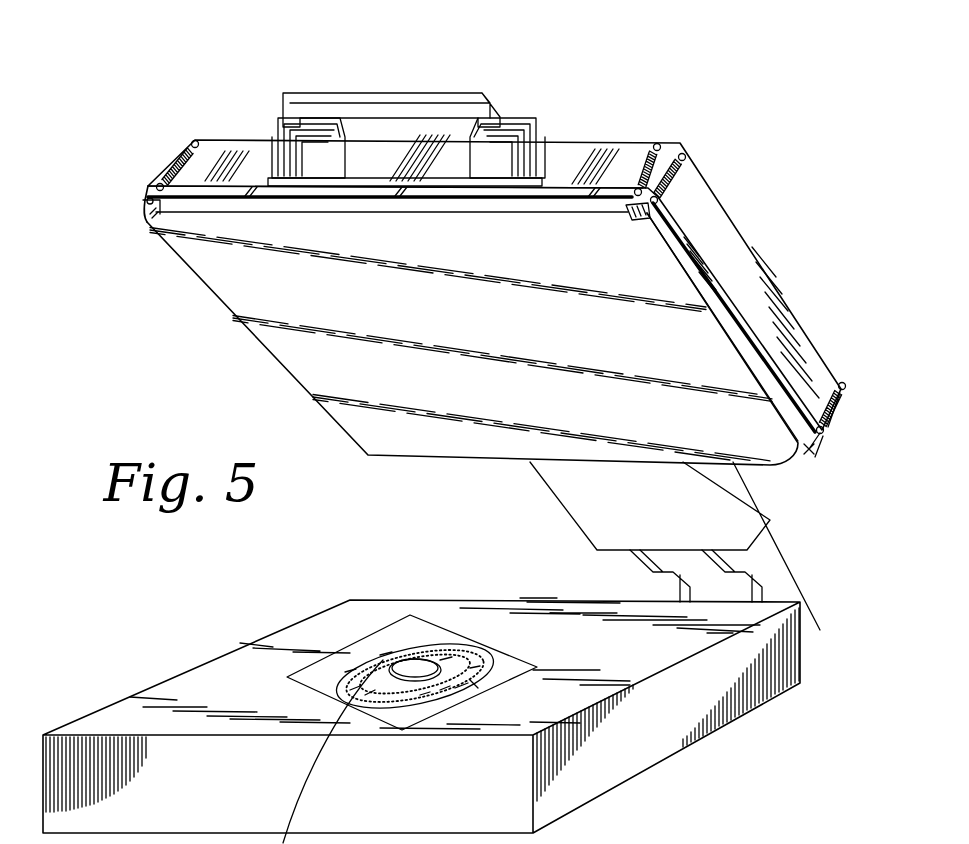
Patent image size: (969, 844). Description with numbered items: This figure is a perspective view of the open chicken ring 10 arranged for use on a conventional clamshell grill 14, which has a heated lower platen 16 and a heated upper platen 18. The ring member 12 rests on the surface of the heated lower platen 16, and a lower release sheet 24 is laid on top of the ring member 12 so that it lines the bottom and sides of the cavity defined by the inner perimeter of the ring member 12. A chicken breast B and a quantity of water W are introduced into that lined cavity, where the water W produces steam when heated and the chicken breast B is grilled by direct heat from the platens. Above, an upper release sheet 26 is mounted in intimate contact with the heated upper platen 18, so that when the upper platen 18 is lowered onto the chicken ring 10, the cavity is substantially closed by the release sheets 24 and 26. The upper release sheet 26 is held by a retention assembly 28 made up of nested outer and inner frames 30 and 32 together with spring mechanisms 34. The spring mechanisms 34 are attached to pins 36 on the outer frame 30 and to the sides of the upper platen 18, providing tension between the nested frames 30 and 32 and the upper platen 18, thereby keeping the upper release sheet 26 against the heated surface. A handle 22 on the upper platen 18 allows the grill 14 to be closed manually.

The open chicken ring 10 is at (484, 630).
The ring member 12 is at (382, 657).
The clamshell grill 14 is at (535, 85).
The heated lower platen 16 is at (190, 697).
The heated upper platen 18 is at (560, 153).
The handle 22 is at (370, 93).
The lower release sheet 24 is at (413, 630).
The upper release sheet 26 is at (226, 277).
The retention assembly 28 is at (831, 457).
The outer frame 30 is at (150, 190).
The inner frame 32 is at (190, 200).
The spring mechanisms 34 is at (172, 178).
The pins 36 is at (197, 146).
The quantity of water W is at (398, 660).
The chicken breast B is at (414, 660).